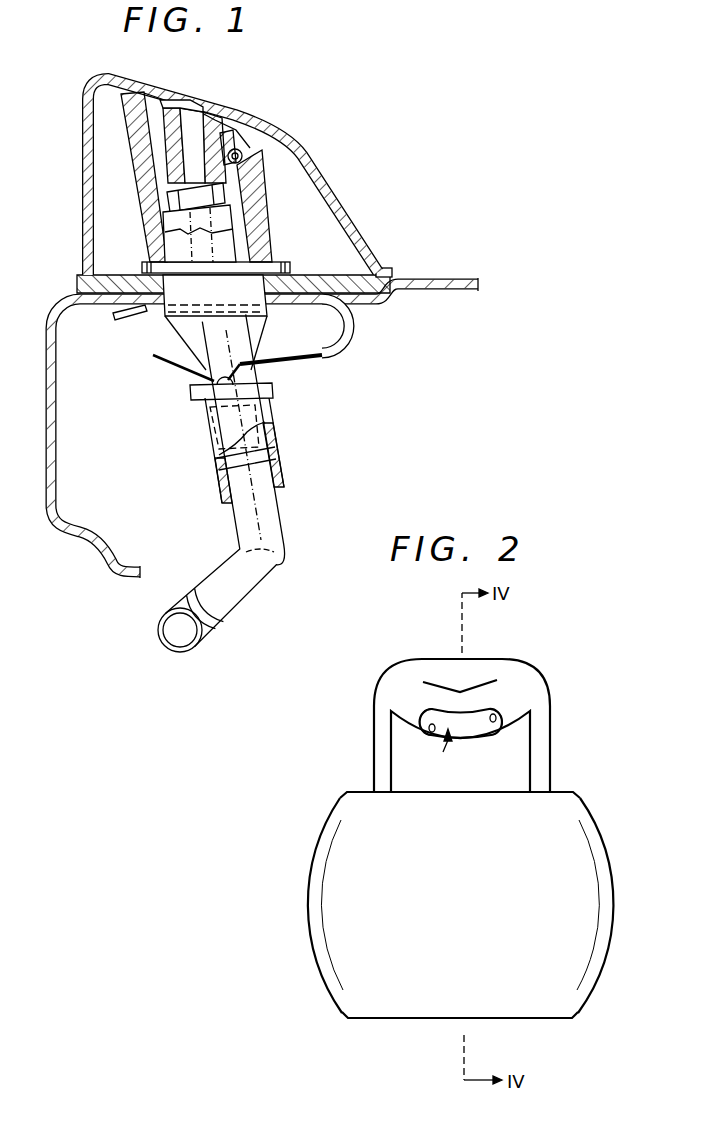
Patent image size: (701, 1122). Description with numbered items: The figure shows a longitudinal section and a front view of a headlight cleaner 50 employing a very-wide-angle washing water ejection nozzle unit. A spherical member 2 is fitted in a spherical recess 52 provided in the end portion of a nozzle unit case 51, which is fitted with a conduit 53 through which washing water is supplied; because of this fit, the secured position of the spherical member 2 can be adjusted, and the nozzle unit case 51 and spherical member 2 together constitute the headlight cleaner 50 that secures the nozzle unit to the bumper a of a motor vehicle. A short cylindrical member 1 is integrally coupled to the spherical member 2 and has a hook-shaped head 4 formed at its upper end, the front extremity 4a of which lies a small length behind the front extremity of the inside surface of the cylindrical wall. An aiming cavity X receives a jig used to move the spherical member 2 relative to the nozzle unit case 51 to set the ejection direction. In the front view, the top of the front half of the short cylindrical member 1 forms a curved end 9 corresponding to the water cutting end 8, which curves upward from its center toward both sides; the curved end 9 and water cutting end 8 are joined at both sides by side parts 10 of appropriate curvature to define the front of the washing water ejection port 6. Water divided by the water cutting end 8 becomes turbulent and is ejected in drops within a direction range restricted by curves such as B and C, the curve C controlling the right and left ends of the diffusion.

In FIG. 1, the headlight cleaner 50 is at (322, 158).
In FIG. 1, the nozzle unit case 51 is at (147, 135).
In FIG. 1, the short cylindrical member 1 is at (167, 117).
In FIG. 2, the short cylindrical member 1 is at (553, 744).
In FIG. 1, the spherical member 2 is at (213, 153).
In FIG. 2, the spherical member 2 is at (612, 873).
In FIG. 1, the aiming cavity X is at (237, 160).
In FIG. 1, the spherical recess 52 is at (240, 160).
In FIG. 1, the bumper a is at (440, 279).
In FIG. 1, the conduit 53 is at (287, 530).
In FIG. 2, the head 4 is at (507, 670).
In FIG. 2, the front extremity 4a is at (455, 680).
In FIG. 2, the curved end 9 is at (460, 740).
In FIG. 2, the side parts 10 is at (428, 712).
In FIG. 2, the water cutting end 8 is at (470, 712).
In FIG. 2, the washing water ejection port 6 is at (447, 758).
In FIG. 2, the curve B is at (427, 730).
In FIG. 2, the curve C is at (497, 720).